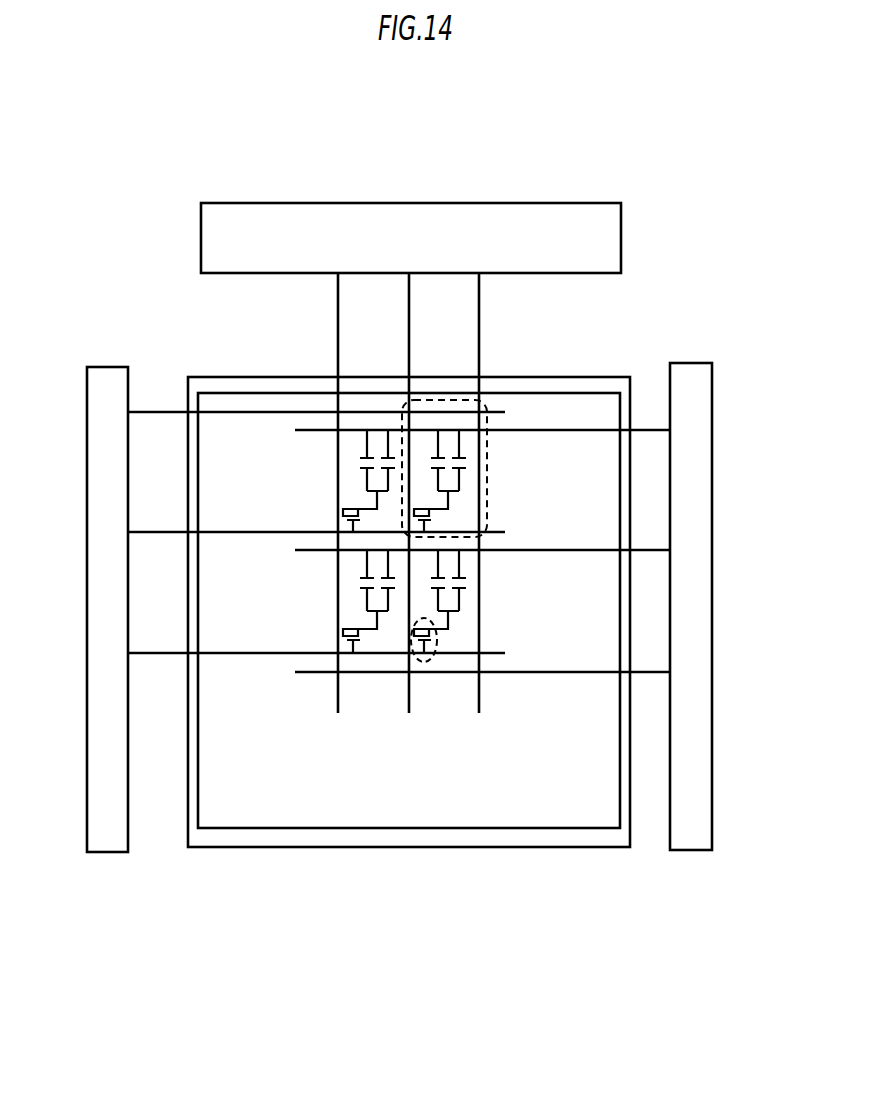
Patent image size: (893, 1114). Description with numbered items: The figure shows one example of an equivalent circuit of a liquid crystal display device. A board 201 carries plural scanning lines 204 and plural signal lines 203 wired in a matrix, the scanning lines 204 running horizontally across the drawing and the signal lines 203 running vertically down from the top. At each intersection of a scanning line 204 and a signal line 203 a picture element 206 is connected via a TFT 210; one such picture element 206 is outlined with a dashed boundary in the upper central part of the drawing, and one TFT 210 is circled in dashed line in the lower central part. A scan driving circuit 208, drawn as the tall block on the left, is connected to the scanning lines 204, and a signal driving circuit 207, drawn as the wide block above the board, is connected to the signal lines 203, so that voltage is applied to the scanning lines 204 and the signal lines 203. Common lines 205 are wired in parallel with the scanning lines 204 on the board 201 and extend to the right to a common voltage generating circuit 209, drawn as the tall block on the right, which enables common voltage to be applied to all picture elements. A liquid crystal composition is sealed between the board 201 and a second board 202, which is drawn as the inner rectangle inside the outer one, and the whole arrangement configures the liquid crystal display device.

The board 201 is at (232, 874).
The board 202 is at (307, 852).
The signal line 203 is at (280, 234).
The scanning line 204 is at (130, 358).
The common line 205 is at (618, 368).
The picture element 206 is at (526, 387).
The signal driving circuit 207 is at (336, 187).
The scan driving circuit 208 is at (58, 501).
The common voltage generating circuit 209 is at (719, 413).
The TFT 210 is at (424, 665).